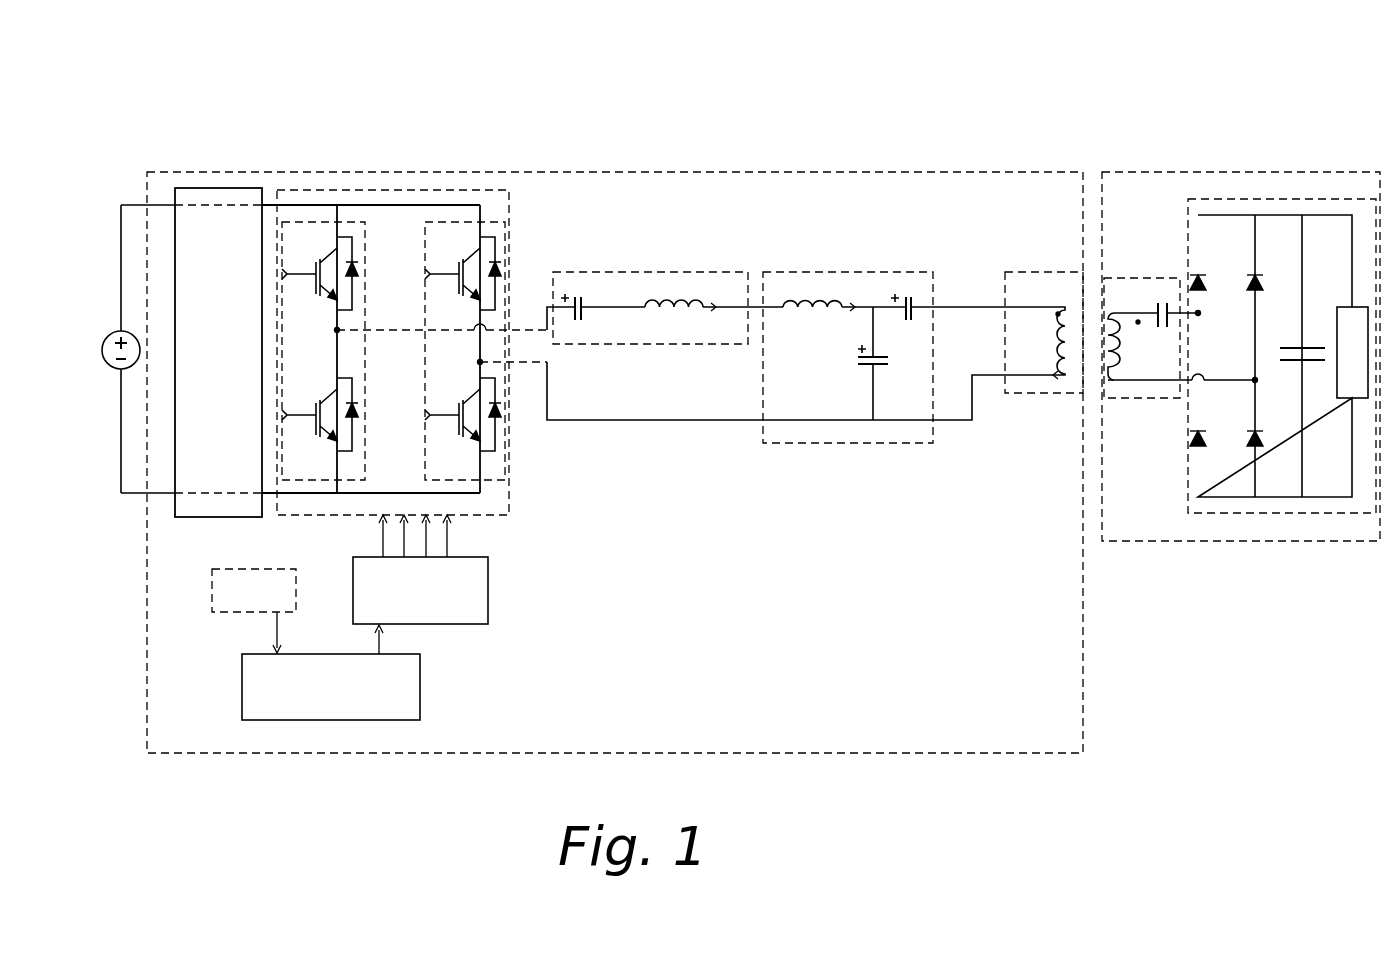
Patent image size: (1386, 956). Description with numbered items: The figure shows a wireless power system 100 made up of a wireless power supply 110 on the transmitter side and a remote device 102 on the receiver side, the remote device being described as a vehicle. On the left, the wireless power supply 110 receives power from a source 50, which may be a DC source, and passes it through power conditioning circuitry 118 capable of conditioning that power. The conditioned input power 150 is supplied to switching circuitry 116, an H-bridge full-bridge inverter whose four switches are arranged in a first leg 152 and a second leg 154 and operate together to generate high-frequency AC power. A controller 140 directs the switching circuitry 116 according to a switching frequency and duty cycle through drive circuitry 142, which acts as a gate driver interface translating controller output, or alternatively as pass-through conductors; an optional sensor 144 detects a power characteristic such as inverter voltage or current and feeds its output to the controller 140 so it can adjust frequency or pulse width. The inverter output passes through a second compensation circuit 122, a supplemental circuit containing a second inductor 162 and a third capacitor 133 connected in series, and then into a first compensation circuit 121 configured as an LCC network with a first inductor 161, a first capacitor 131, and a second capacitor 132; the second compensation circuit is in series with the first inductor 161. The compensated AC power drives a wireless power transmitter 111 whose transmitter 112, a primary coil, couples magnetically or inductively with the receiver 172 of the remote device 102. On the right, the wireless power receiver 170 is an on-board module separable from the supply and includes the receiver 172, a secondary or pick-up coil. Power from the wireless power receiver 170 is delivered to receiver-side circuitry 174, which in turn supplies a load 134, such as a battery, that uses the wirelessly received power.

The wireless power system 100 is at (963, 96).
The wireless power supply 110 is at (404, 172).
The switching circuitry 116 is at (302, 190).
The power conditioning circuitry 118 is at (208, 188).
The input power 150 is at (472, 212).
The first leg 152 is at (365, 295).
The second leg 154 is at (425, 410).
The second compensation circuit 122 is at (623, 272).
The third capacitor 133 is at (579, 316).
The second inductor 162 is at (650, 311).
The first compensation circuit 121 is at (822, 272).
The first inductor 161 is at (790, 311).
The first capacitor 131 is at (869, 366).
The second capacitor 132 is at (908, 319).
The wireless power transmitter 111 is at (1048, 395).
The transmitter 112 is at (1065, 305).
The remote device 102 is at (1275, 545).
The wireless power receiver 170 is at (1140, 400).
The receiver 172 is at (1133, 348).
The receiver-side circuitry 174 is at (1297, 199).
The load 134 is at (1345, 306).
The drive circuitry 142 is at (463, 625).
The controller 140 is at (422, 690).
The sensor 144 is at (214, 581).
The source 50 is at (104, 356).